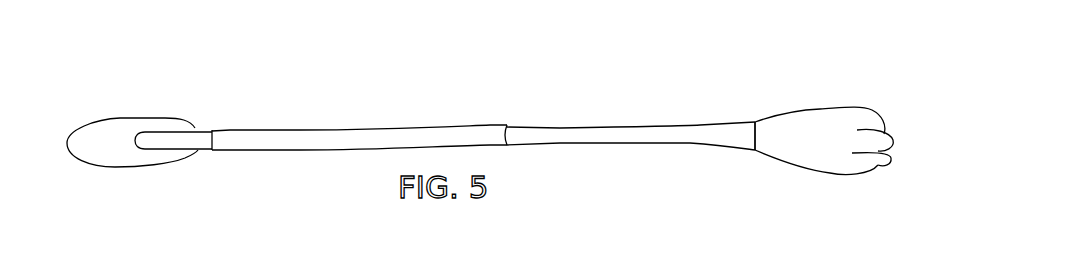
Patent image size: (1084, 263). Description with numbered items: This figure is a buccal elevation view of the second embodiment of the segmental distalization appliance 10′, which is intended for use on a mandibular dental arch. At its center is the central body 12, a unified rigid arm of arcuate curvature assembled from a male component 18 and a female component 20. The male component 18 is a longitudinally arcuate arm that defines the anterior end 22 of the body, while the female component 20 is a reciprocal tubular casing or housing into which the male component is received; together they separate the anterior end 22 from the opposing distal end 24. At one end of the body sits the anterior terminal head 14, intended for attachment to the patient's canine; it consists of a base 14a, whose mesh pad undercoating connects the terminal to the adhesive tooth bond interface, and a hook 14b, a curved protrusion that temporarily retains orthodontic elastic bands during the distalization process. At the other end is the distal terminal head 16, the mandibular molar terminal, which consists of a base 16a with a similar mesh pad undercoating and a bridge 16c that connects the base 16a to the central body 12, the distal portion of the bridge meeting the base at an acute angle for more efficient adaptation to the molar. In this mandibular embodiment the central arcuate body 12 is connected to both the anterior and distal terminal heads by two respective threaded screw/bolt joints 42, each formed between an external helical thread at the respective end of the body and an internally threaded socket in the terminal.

The segmental distalization appliance 10′ is at (725, 67).
The central body 12 is at (602, 105).
The anterior terminal head 14 is at (850, 95).
The base 14a is at (810, 120).
The hook 14b is at (883, 148).
The distal terminal head 16 is at (137, 113).
The base 16a is at (100, 145).
The bridge 16c is at (157, 140).
The male component 18 is at (332, 140).
The female component 20 is at (648, 137).
The anterior end 22 is at (133, 140).
The distal end 24 is at (752, 133).
The threaded screw/bolt joint 42 is at (213, 120).